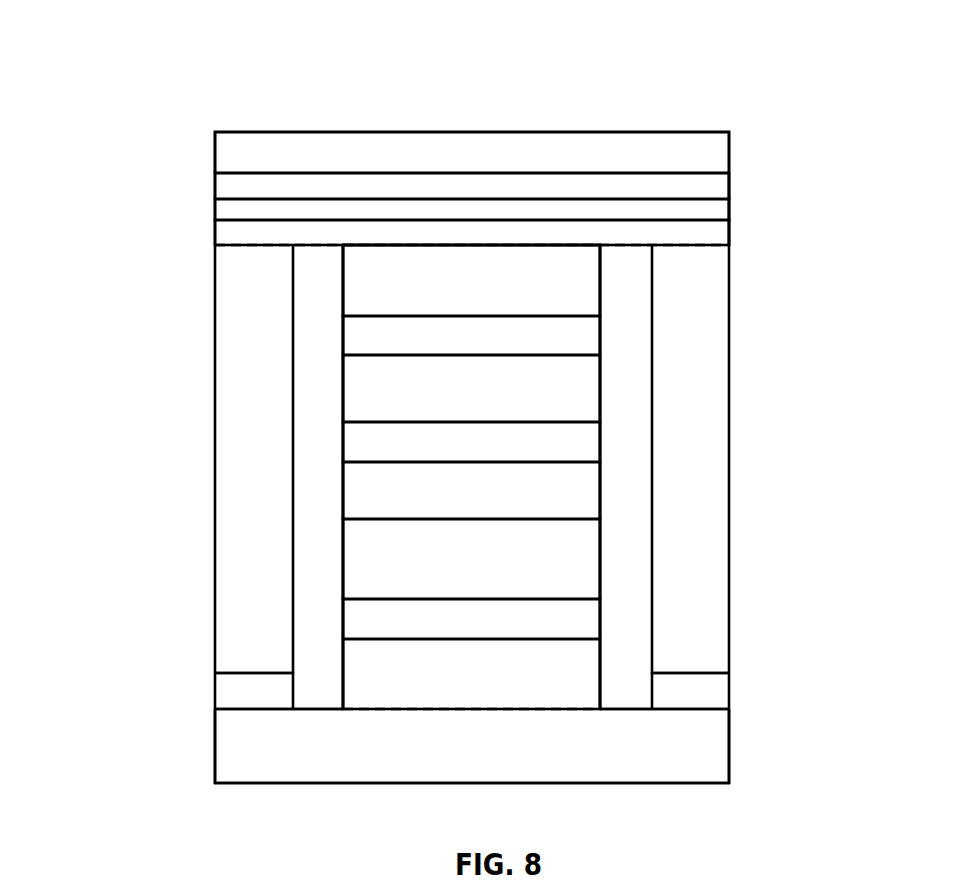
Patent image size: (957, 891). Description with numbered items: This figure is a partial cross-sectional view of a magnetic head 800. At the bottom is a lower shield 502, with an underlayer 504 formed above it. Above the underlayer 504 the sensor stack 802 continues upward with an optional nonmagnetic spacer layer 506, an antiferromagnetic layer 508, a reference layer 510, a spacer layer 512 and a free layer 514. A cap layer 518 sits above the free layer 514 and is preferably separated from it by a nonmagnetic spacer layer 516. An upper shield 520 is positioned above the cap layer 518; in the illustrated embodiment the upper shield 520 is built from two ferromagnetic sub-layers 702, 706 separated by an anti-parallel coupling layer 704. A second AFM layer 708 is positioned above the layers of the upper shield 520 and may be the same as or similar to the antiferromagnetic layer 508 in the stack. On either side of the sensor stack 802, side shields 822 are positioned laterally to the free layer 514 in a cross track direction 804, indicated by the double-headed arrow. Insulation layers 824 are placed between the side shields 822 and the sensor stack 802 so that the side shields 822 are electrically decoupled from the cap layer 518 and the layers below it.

The magnetic head 800 is at (759, 62).
The sensor stack 802 is at (620, 360).
The cross track direction 804 is at (138, 469).
The lower shield 502 is at (492, 757).
The underlayer 504 is at (492, 684).
The nonmagnetic spacer layer 506 is at (492, 631).
The antiferromagnetic (AFM) layer 508 is at (492, 571).
The reference layer 510 is at (492, 499).
The spacer layer 512 is at (492, 453).
The free layer 514 is at (492, 399).
The nonmagnetic spacer layer 516 is at (492, 349).
The cap layer 518 is at (492, 300).
The upper shield 520 is at (731, 173).
The ferromagnetic sub-layer 702 is at (215, 238).
The anti-parallel coupling layer 704 is at (215, 212).
The ferromagnetic sub-layer 706 is at (215, 190).
The second AFM layer 708 is at (492, 163).
The side shields 822 is at (214, 434).
The insulation layers 824 is at (214, 686).